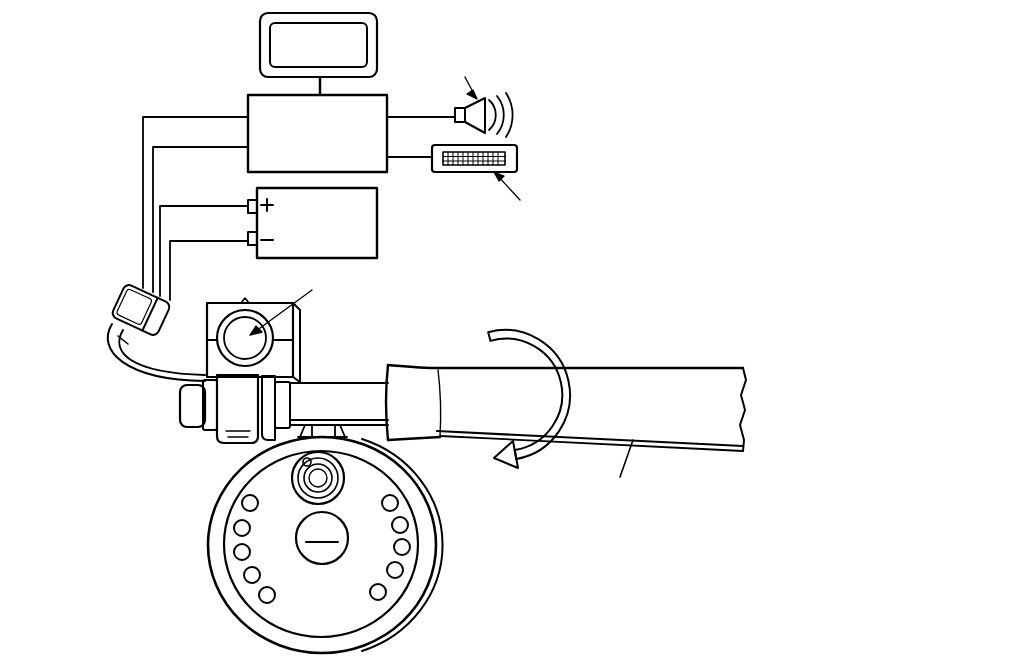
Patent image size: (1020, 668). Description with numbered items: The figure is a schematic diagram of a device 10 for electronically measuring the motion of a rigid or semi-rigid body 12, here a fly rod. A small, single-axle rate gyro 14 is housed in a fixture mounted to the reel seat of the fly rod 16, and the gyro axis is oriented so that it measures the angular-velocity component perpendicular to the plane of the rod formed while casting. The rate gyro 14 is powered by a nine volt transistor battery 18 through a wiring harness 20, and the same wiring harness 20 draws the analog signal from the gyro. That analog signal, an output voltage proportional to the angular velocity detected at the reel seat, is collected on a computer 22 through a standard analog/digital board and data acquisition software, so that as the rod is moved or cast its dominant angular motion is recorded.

The device 10 is at (93, 66).
The rigid or semi-rigid body 12 is at (702, 362).
The rate gyro 14 is at (298, 333).
The fly rod 16 is at (417, 385).
The battery 18 is at (377, 216).
The wiring harness 20 is at (137, 381).
The computer 22 is at (226, 79).